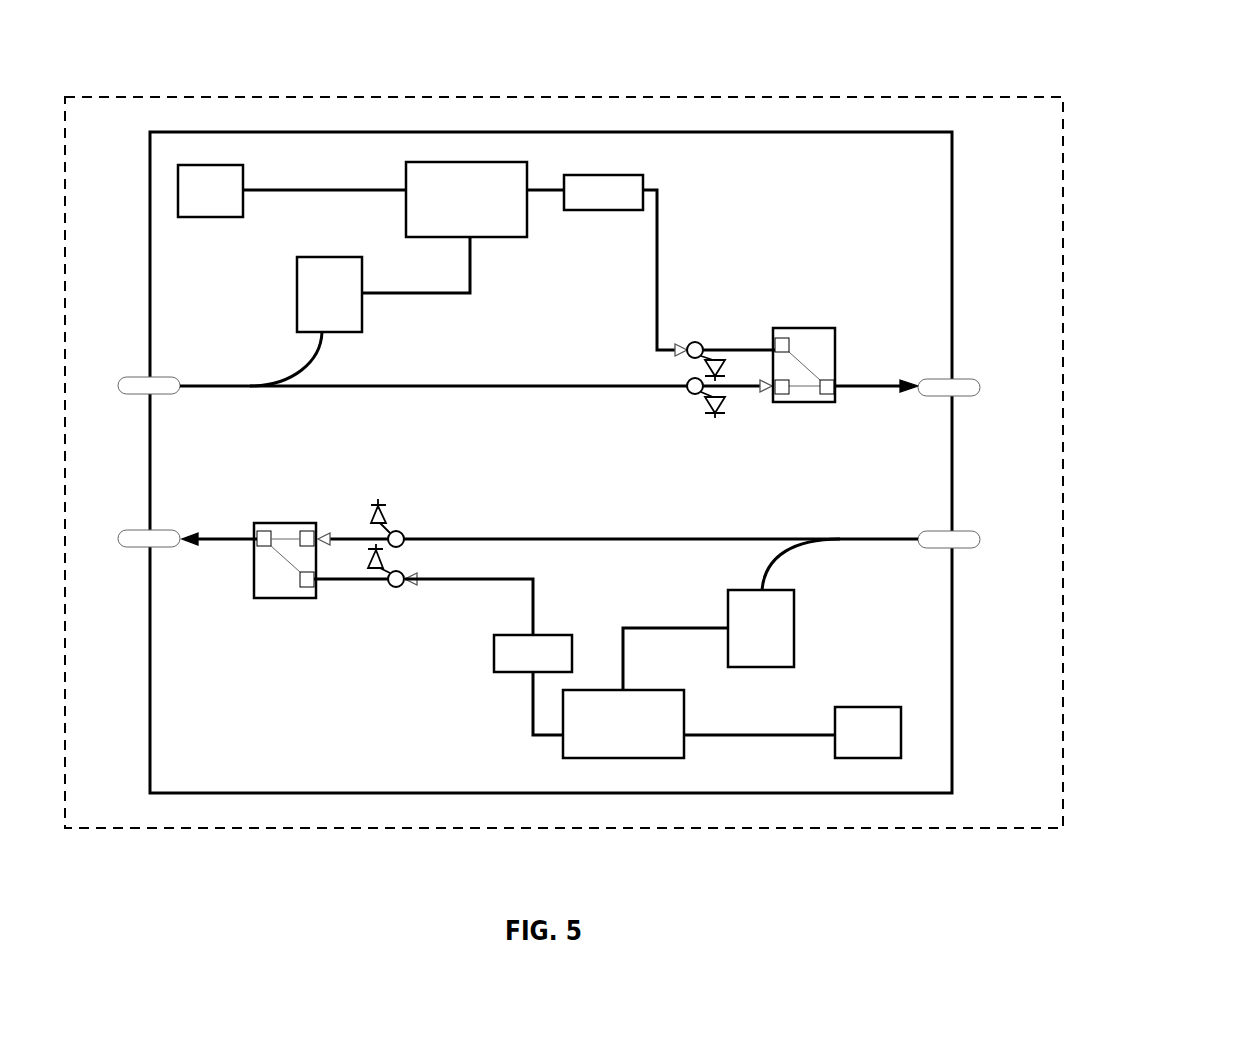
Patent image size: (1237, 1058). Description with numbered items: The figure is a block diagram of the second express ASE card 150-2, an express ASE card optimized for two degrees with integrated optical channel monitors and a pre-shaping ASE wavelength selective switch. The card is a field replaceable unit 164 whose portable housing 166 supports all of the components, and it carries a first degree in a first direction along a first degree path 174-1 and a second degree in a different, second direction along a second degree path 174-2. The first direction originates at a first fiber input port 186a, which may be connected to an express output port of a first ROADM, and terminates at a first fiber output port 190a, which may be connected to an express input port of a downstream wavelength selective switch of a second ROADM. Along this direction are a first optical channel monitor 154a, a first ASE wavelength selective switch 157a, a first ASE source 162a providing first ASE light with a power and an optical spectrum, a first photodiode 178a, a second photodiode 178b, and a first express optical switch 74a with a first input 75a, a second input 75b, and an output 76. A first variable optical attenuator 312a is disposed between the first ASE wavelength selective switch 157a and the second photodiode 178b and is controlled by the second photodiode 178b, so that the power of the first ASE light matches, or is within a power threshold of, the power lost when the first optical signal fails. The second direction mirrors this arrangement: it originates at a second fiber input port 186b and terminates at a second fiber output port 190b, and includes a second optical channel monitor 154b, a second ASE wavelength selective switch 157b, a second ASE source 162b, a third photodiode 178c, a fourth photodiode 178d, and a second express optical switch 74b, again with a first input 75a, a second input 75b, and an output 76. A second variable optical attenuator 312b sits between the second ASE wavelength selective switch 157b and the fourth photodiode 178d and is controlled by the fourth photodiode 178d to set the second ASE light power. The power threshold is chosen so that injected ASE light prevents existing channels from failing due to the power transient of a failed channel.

The second express ASE card 150-2 is at (1088, 88).
The portable housing 166 is at (953, 240).
The field replaceable unit 164 is at (1064, 462).
The first ASE source 162a is at (210, 191).
The second ASE source 162b is at (868, 732).
The first ASE wavelength selective switch 157a is at (403, 227).
The second ASE wavelength selective switch 157b is at (699, 693).
The first variable optical attenuator 312a is at (619, 262).
The second variable optical attenuator 312b is at (488, 657).
The first optical channel monitor 154a is at (306, 321).
The second optical channel monitor 154b is at (784, 603).
The first fiber input port 186a is at (118, 385).
The second fiber input port 186b is at (1000, 523).
The first fiber output port 190a is at (1000, 363).
The second fiber output port 190b is at (118, 538).
The first degree path 174-1 is at (505, 384).
The second degree path 174-2 is at (701, 537).
The first photodiode 178a is at (707, 403).
The second photodiode 178b is at (707, 356).
The third photodiode 178c is at (385, 521).
The fourth photodiode 178d is at (382, 560).
The first express optical switch 74a is at (807, 328).
The second express optical switch 74b is at (285, 598).
The first input 75a is at (782, 402).
The second input 75b is at (783, 338).
The output 76 is at (832, 395).